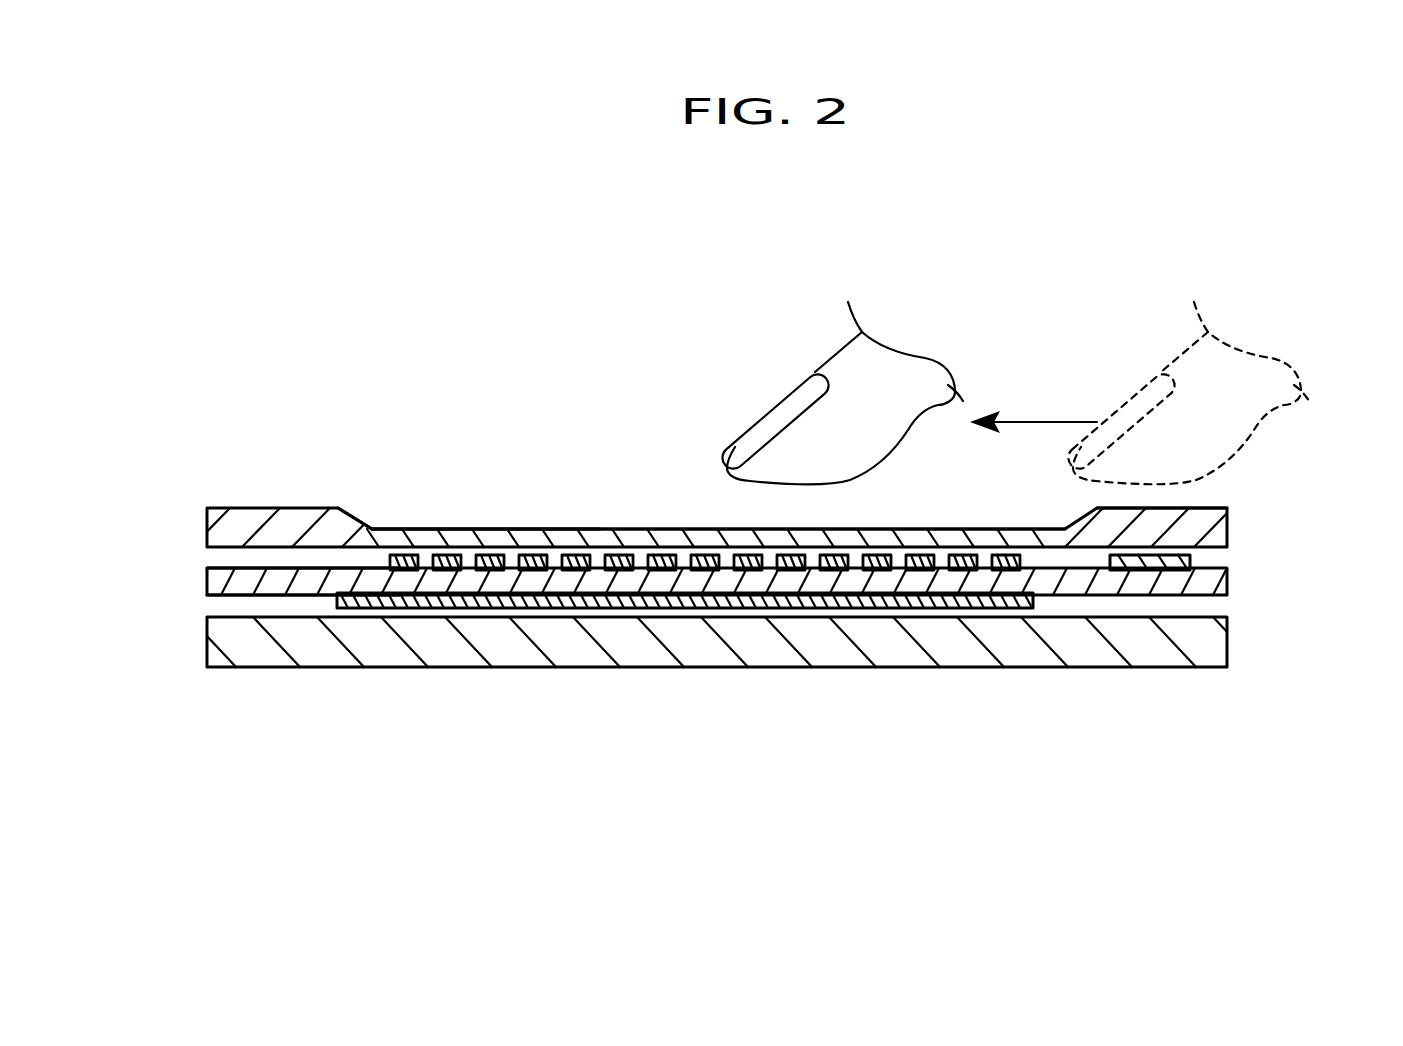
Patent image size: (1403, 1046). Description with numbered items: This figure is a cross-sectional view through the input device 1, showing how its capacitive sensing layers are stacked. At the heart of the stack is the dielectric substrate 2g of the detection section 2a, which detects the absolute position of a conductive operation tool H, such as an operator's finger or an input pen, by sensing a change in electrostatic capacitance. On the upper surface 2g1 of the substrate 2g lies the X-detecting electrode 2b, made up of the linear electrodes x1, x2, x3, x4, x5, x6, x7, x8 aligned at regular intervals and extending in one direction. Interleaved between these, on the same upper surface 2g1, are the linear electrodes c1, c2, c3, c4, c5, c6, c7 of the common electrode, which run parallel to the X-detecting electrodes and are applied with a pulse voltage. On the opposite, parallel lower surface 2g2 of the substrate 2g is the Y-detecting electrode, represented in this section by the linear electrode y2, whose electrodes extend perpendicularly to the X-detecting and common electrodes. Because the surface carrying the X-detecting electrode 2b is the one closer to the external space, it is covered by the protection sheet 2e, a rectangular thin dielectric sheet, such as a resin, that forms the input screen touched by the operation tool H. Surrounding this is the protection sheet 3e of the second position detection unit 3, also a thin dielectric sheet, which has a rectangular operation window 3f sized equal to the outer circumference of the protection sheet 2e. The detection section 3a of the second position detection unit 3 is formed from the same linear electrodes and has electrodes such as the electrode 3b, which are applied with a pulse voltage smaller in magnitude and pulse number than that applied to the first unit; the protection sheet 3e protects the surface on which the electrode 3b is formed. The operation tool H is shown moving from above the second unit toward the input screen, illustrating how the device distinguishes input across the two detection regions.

The input device 1 is at (1230, 640).
The detection section 2a is at (588, 529).
The X-detecting electrode 2b is at (496, 541).
The protection sheet 2e is at (408, 528).
The dielectric substrate 2g is at (207, 578).
The upper surface 2g1 is at (245, 568).
The lower surface 2g2 is at (240, 595).
The second position detection unit 3 is at (1230, 569).
The detection section 3a is at (1205, 502).
The electrode 3b is at (1145, 575).
The protection sheet 3e is at (302, 518).
The operation window 3f is at (447, 529).
The operation tool H is at (833, 353).
The linear electrode x1 is at (404, 575).
The linear electrode x2 is at (490, 575).
The linear electrode x3 is at (576, 575).
The linear electrode x4 is at (662, 575).
The linear electrode x5 is at (748, 575).
The linear electrode x6 is at (834, 575).
The linear electrode x7 is at (920, 575).
The linear electrode x8 is at (1006, 575).
The linear electrode c1 is at (447, 575).
The linear electrode c2 is at (533, 575).
The linear electrode c3 is at (619, 575).
The linear electrode c4 is at (705, 575).
The linear electrode c5 is at (791, 575).
The linear electrode c6 is at (877, 575).
The linear electrode c7 is at (963, 575).
The linear electrode y2 is at (330, 610).